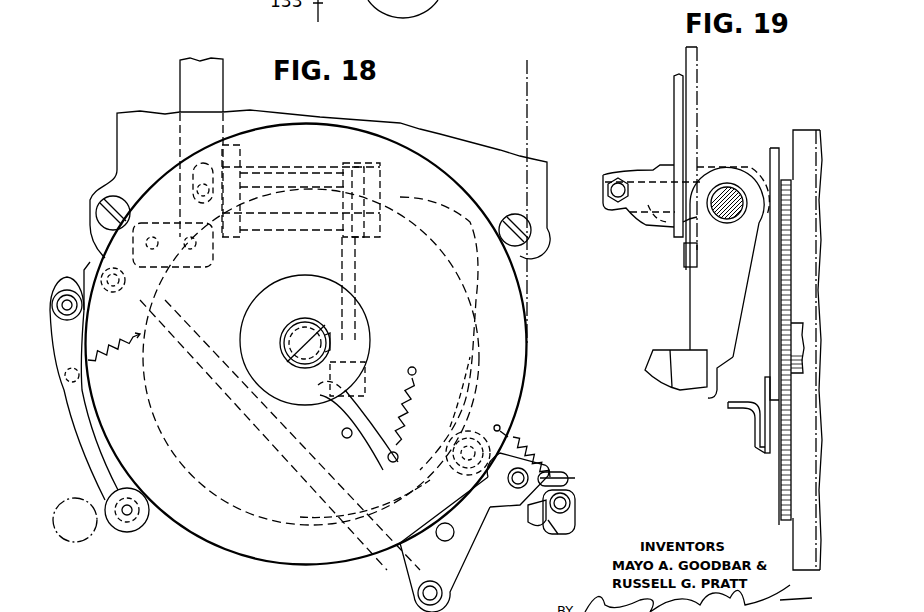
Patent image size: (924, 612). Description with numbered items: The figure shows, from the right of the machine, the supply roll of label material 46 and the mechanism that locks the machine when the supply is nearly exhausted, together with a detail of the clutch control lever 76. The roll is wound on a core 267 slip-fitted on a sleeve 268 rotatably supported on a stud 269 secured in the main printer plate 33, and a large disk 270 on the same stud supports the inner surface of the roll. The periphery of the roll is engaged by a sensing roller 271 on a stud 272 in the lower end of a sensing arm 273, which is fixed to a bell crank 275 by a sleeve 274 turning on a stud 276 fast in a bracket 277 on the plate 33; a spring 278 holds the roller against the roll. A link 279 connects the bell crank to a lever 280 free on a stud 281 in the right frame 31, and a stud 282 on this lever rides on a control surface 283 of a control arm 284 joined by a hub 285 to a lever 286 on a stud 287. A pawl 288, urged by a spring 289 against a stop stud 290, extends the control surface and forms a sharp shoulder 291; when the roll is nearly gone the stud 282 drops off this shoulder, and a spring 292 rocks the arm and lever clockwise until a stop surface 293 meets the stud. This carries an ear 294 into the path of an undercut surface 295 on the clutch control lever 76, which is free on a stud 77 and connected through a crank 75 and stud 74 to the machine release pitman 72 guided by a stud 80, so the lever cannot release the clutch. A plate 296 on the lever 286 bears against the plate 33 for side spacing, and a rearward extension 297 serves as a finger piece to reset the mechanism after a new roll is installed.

In FIG. 19, the right frame 31 is at (698, 60).
In FIG. 18, the main printer plate 33 is at (460, 152).
In FIG. 19, the main printer plate 33 is at (770, 158).
In FIG. 18, the supply roll of label material 46 is at (527, 87).
In FIG. 19, the supply roll of label material 46 is at (806, 134).
In FIG. 18, the machine release pitman 72 is at (220, 68).
In FIG. 19, the machine release pitman 72 is at (674, 137).
In FIG. 19, the stud 74 is at (602, 190).
In FIG. 18, the crank 75 is at (232, 148).
In FIG. 19, the crank 75 is at (651, 214).
In FIG. 18, the clutch control lever 76 is at (341, 263).
In FIG. 19, the clutch control lever 76 is at (700, 292).
In FIG. 18, the stud 77 is at (325, 182).
In FIG. 19, the stud 77 is at (728, 196).
In FIG. 18, the stud 80 is at (192, 202).
In FIG. 18, the core 267 is at (349, 306).
In FIG. 18, the sleeve 268 is at (330, 333).
In FIG. 19, the sleeve 268 is at (797, 335).
In FIG. 18, the stud 269 is at (282, 346).
In FIG. 18, the large disk 270 is at (475, 340).
In FIG. 19, the large disk 270 is at (782, 488).
In FIG. 18, the sensing roller 271 is at (87, 537).
In FIG. 18, the stud 272 is at (128, 518).
In FIG. 18, the sensing arm 273 is at (82, 449).
In FIG. 18, the sleeve 274 is at (74, 280).
In FIG. 18, the bell crank 275 is at (58, 353).
In FIG. 18, the stud 276 is at (64, 309).
In FIG. 18, the bracket 277 is at (86, 277).
In FIG. 18, the spring 278 is at (127, 358).
In FIG. 18, the link 279 is at (245, 430).
In FIG. 18, the lever 280 is at (448, 570).
In FIG. 18, the stud 281 is at (447, 537).
In FIG. 18, the stud 282 is at (537, 455).
In FIG. 18, the control surface 283 is at (533, 518).
In FIG. 18, the control arm 284 is at (553, 466).
In FIG. 18, the hub 285 is at (452, 426).
In FIG. 18, the lever 286 is at (428, 523).
In FIG. 19, the lever 286 is at (757, 445).
In FIG. 18, the stud 287 is at (428, 450).
In FIG. 18, the pawl 288 is at (571, 503).
In FIG. 18, the spring 289 is at (513, 433).
In FIG. 18, the stop stud 290 is at (570, 482).
In FIG. 18, the sharp shoulder 291 is at (546, 524).
In FIG. 18, the spring 292 is at (346, 405).
In FIG. 18, the stop surface 293 is at (553, 534).
In FIG. 18, the ear 294 is at (350, 390).
In FIG. 19, the ear 294 is at (743, 409).
In FIG. 19, the undercut surface 295 is at (715, 395).
In FIG. 18, the plate 296 is at (330, 397).
In FIG. 19, the plate 296 is at (765, 385).
In FIG. 18, the extension 297 is at (576, 490).